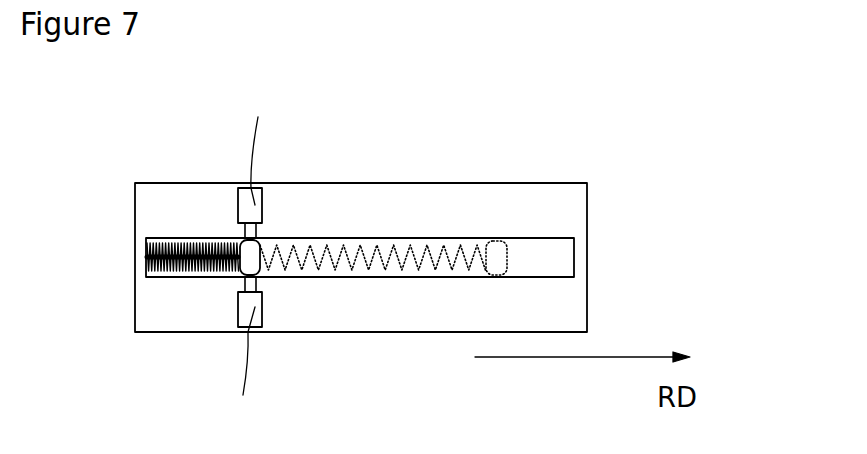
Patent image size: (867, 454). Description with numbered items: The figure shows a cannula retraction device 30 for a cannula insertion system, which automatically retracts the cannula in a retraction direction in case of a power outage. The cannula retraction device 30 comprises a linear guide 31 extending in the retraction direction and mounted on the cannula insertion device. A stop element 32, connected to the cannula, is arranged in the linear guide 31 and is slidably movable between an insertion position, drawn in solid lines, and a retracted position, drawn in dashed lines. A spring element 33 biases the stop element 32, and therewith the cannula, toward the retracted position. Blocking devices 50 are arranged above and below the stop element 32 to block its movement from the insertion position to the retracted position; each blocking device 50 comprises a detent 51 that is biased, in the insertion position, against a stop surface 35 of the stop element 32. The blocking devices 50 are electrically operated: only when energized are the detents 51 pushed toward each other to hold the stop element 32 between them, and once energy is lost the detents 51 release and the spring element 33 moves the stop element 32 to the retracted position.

The cannula retraction device 30 is at (462, 132).
The linear guide 31 is at (493, 203).
The stop element 32 is at (252, 255).
The spring element 33 is at (185, 272).
The stop surface 35 is at (246, 234).
The blocking device 50 is at (260, 188).
The detent 51 is at (235, 188).